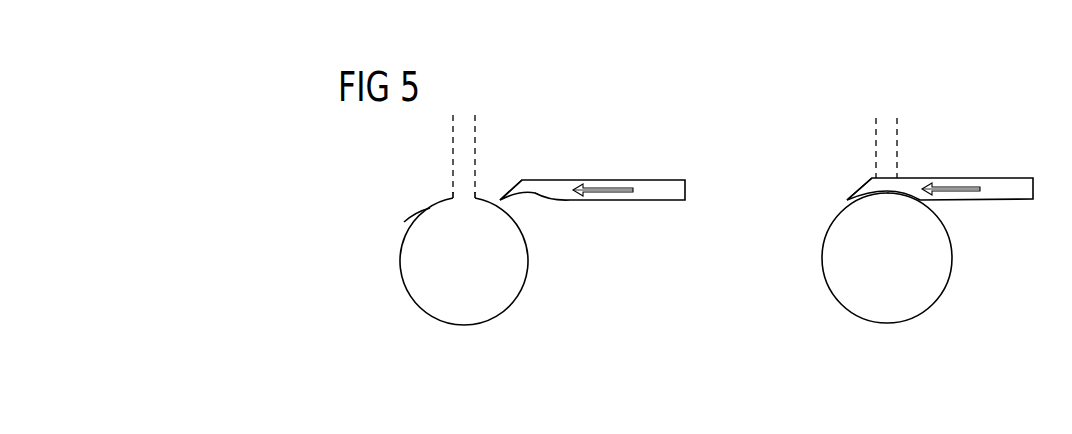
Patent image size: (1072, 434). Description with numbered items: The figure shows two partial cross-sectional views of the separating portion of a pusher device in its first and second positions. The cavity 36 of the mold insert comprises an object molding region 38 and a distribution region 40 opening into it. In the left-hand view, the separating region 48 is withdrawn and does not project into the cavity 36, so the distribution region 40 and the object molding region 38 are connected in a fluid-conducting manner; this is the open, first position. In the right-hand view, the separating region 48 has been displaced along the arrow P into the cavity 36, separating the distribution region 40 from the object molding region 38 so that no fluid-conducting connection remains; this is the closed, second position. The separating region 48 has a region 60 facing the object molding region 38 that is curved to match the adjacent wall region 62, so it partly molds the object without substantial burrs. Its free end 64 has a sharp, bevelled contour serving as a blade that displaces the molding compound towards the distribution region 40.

The cavity 36 is at (412, 193).
The object molding region 38 is at (426, 318).
The distribution region 40 is at (453, 143).
The separating region 48 is at (648, 202).
The region facing the object molding region 60 is at (543, 196).
The wall region 62 is at (414, 209).
The free end 64 is at (502, 186).
The arrow P is at (605, 180).